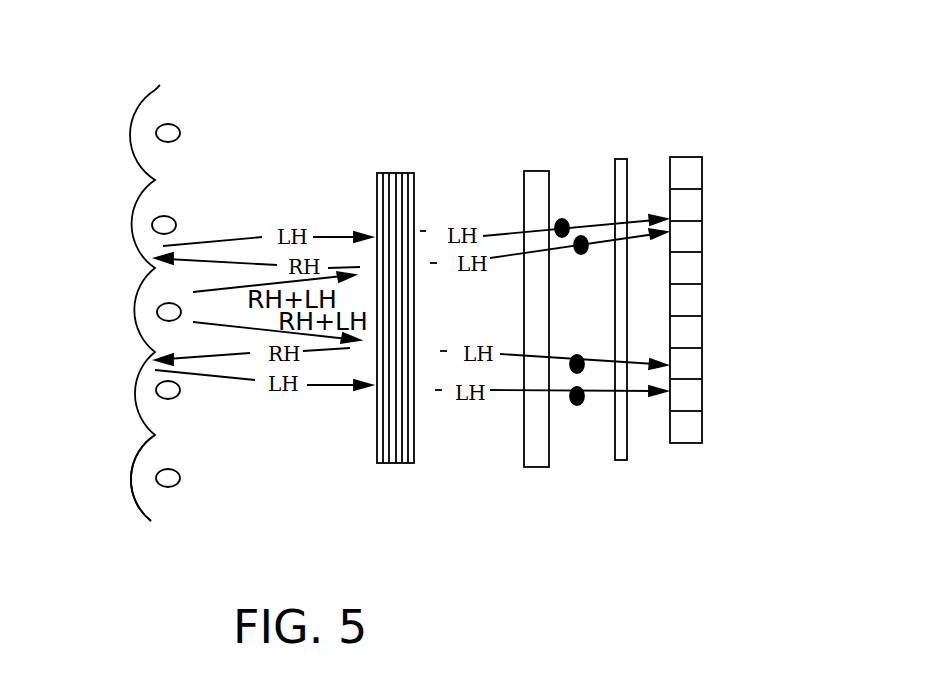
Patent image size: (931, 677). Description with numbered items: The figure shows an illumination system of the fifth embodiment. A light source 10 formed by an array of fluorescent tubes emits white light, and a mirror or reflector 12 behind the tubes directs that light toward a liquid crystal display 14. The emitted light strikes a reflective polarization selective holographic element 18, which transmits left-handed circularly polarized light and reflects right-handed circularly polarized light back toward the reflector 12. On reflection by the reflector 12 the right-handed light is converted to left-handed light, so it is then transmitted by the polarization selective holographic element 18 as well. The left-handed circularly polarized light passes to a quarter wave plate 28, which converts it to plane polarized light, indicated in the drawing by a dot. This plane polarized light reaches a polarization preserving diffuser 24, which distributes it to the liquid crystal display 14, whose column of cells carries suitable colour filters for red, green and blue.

The light source 10 is at (113, 267).
The reflector 12 is at (137, 503).
The polarization selective holographic element 18 is at (392, 252).
The quarter wave plate 28 is at (636, 292).
The polarization preserving diffuser 24 is at (567, 410).
The liquid crystal display 14 is at (712, 375).